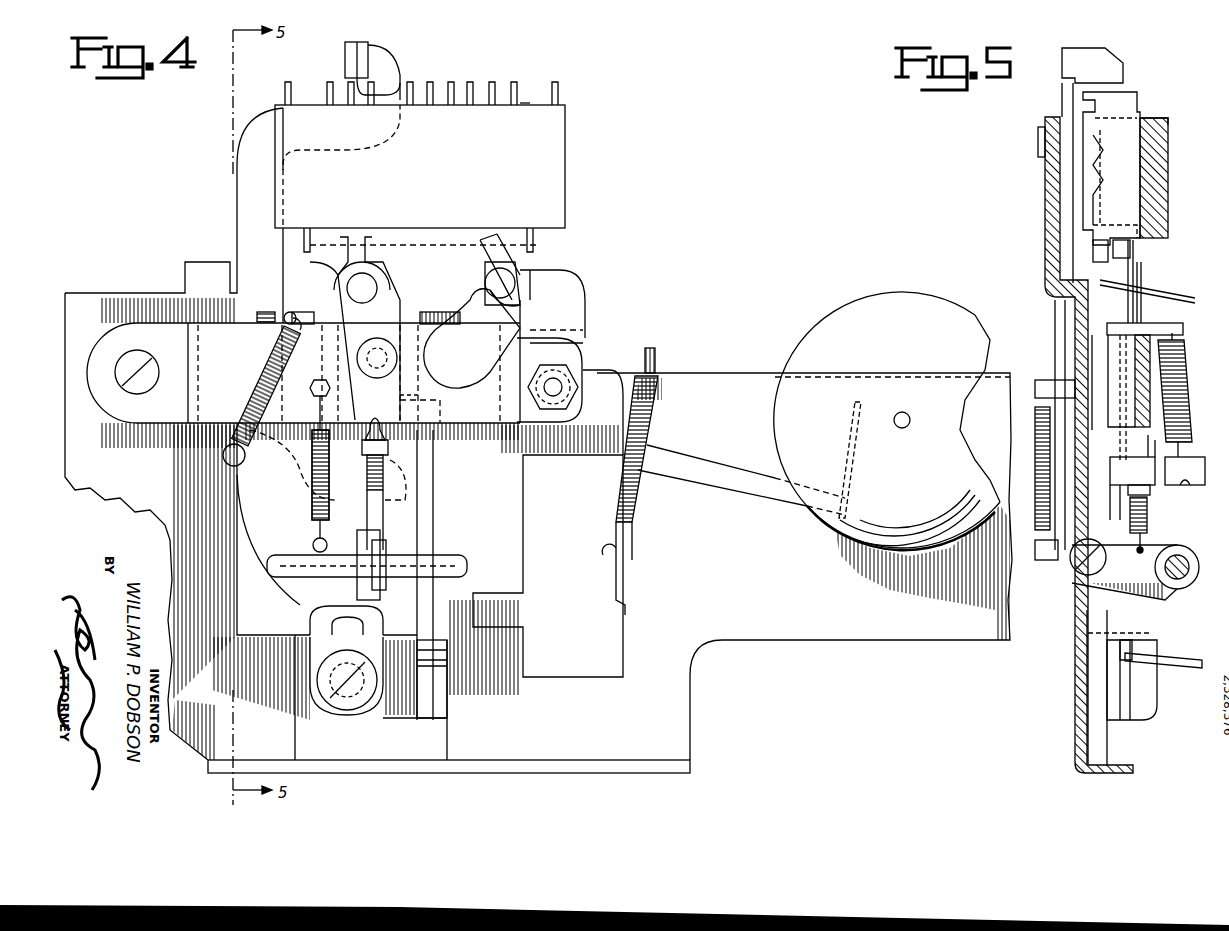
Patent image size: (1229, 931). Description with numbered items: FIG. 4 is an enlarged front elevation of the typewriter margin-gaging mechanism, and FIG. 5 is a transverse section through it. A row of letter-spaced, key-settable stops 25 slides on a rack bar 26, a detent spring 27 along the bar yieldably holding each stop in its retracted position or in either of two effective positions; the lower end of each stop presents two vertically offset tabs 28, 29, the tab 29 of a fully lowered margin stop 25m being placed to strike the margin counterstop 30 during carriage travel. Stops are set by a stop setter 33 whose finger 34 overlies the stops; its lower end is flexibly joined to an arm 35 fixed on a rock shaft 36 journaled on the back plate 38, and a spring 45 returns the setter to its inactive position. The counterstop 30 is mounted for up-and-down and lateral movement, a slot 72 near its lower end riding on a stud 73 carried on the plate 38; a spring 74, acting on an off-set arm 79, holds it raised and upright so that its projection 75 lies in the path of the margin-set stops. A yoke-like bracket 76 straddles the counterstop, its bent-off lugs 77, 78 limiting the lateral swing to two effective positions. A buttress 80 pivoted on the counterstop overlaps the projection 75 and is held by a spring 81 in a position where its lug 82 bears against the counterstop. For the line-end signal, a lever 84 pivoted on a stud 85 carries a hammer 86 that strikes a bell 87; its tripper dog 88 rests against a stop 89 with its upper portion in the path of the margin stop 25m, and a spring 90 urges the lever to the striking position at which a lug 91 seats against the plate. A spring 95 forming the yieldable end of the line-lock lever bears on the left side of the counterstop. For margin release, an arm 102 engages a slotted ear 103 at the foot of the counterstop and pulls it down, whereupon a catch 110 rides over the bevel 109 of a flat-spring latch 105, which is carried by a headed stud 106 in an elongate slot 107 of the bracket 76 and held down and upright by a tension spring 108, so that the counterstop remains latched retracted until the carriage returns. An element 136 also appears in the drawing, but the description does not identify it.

In FIG. 4, the key-settable stops 25 is at (470, 86).
In FIG. 5, the key-settable stops 25 is at (1128, 112).
In FIG. 4, the margin stop 25m is at (300, 242).
In FIG. 4, the rack bar 26 is at (450, 194).
In FIG. 5, the rack bar 26 is at (1168, 190).
In FIG. 5, the detent spring 27 is at (1130, 178).
In FIG. 5, the tab 28 is at (1097, 238).
In FIG. 5, the tab 29 is at (1135, 247).
In FIG. 4, the margin counterstop 30 is at (382, 286).
In FIG. 5, the margin counterstop 30 is at (1108, 258).
In FIG. 4, the stop setter 33 is at (393, 56).
In FIG. 5, the stop setter 33 is at (1062, 100).
In FIG. 4, the finger 34 is at (352, 56).
In FIG. 5, the finger 34 is at (1115, 68).
In FIG. 4, the arm 35 is at (357, 585).
In FIG. 5, the arm 35 is at (1146, 586).
In FIG. 4, the rock shaft 36 is at (272, 572).
In FIG. 5, the rock shaft 36 is at (1178, 590).
In FIG. 4, the back plate 38 is at (795, 611).
In FIG. 5, the back plate 38 is at (1075, 630).
In FIG. 4, the spring 45 is at (312, 510).
In FIG. 5, the spring 45 is at (1035, 440).
In FIG. 4, the slot 72 is at (320, 633).
In FIG. 5, the slot 72 is at (1150, 633).
In FIG. 4, the stud 73 is at (340, 708).
In FIG. 5, the stud 73 is at (1145, 700).
In FIG. 4, the spring 74 is at (262, 360).
In FIG. 5, the spring 74 is at (1190, 400).
In FIG. 4, the projection 75 is at (480, 245).
In FIG. 4, the yoke-like bracket 76 is at (480, 421).
In FIG. 5, the yoke-like bracket 76 is at (1155, 480).
In FIG. 4, the lug 77 is at (480, 315).
In FIG. 4, the lug 78 is at (266, 312).
In FIG. 4, the off-set arm 79 is at (252, 460).
In FIG. 5, the off-set arm 79 is at (1197, 457).
In FIG. 4, the buttress 80 is at (335, 290).
In FIG. 5, the buttress 80 is at (1135, 265).
In FIG. 4, the spring 81 is at (378, 380).
In FIG. 4, the lug 82 is at (440, 305).
In FIG. 4, the lever 84 is at (755, 492).
In FIG. 4, the stud 85 is at (549, 380).
In FIG. 4, the hammer 86 is at (848, 445).
In FIG. 4, the bell 87 is at (820, 335).
In FIG. 4, the tripper dog 88 is at (552, 346).
In FIG. 4, the stop 89 is at (485, 278).
In FIG. 4, the spring 90 is at (612, 482).
In FIG. 4, the lug 91 is at (648, 360).
In FIG. 4, the spring 95 is at (299, 307).
In FIG. 5, the spring 95 is at (1147, 289).
In FIG. 5, the arm 102 is at (1172, 668).
In FIG. 4, the slotted ear 103 is at (440, 652).
In FIG. 5, the slotted ear 103 is at (1135, 648).
In FIG. 4, the latch member 105 is at (425, 408).
In FIG. 5, the latch member 105 is at (1142, 303).
In FIG. 4, the headed stud 106 is at (395, 380).
In FIG. 5, the headed stud 106 is at (1165, 335).
In FIG. 4, the slot 107 is at (345, 366).
In FIG. 4, the tension spring 108 is at (378, 510).
In FIG. 5, the tension spring 108 is at (1147, 525).
In FIG. 4, the bevel 109 is at (405, 492).
In FIG. 5, the bevel 109 is at (1150, 495).
In FIG. 4, the catch 110 is at (390, 470).
In FIG. 5, the catch 110 is at (1080, 520).
In FIG. 4, the terminal 136 is at (524, 100).
In FIG. 5, the terminal 136 is at (1148, 118).